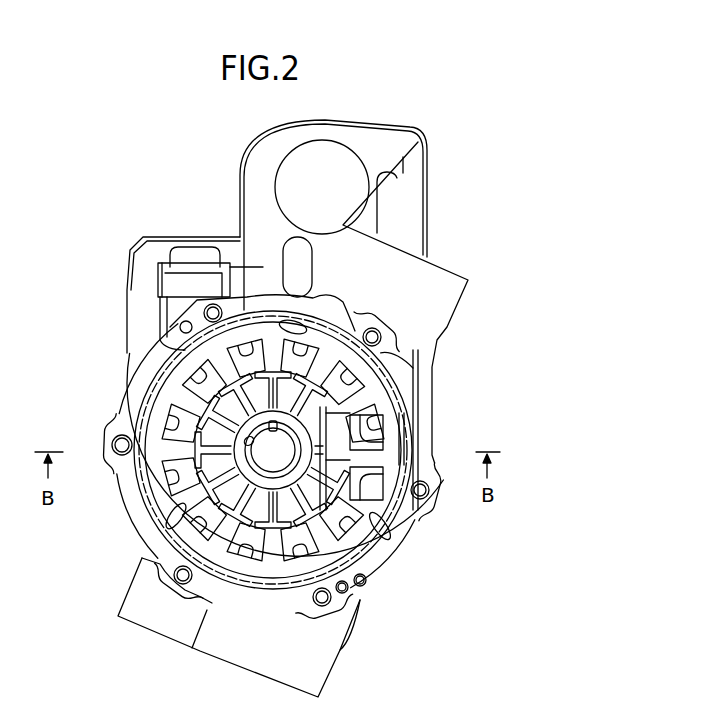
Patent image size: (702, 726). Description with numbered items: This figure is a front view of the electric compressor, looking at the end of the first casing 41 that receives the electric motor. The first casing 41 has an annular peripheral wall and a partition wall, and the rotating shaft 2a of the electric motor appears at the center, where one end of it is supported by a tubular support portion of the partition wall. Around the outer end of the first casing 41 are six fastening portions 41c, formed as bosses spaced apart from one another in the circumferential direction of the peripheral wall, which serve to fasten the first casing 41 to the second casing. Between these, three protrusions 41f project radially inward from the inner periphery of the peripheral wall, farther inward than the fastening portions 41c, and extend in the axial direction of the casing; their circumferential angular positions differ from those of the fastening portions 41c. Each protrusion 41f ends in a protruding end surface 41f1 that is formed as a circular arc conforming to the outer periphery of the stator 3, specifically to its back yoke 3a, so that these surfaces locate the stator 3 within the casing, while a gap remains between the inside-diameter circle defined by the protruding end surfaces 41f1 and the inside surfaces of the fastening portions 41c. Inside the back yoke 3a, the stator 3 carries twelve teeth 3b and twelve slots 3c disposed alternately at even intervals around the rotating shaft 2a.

The rotating shaft 2a is at (255, 462).
The stator 3 is at (172, 390).
The back yoke 3a is at (395, 428).
The teeth 3b is at (355, 413).
The slots 3c is at (358, 394).
The first casing 41 is at (165, 344).
The fastening portions 41c is at (207, 308).
The protrusions 41f is at (257, 312).
The protruding end surface 41f1 is at (302, 328).